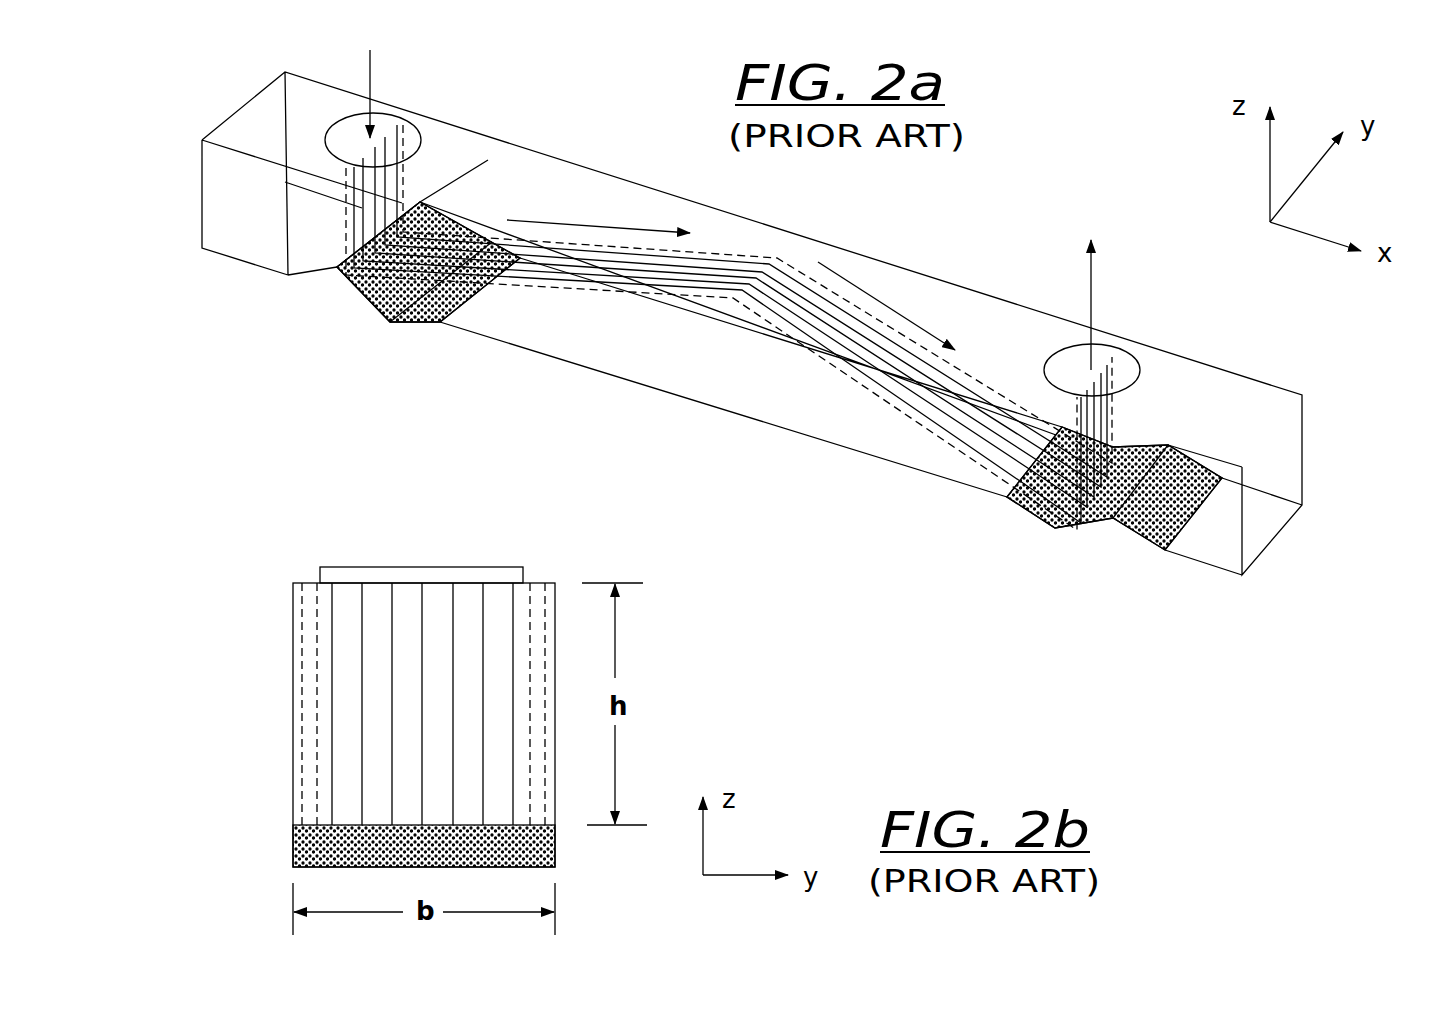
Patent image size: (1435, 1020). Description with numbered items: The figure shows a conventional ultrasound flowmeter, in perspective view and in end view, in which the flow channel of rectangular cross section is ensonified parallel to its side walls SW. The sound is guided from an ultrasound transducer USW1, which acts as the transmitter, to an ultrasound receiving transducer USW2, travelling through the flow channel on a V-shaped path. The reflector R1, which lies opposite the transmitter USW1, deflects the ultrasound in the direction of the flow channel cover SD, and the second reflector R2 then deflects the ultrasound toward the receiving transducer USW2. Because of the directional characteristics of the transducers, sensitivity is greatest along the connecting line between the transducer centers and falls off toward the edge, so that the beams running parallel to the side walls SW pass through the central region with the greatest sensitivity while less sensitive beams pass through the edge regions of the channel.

In FIG. 2A, the flow channel side walls SW is at (217, 185).
In FIG. 2B, the flow channel side walls SW is at (293, 693).
In FIG. 2A, the ultrasound transducer USW1 is at (407, 130).
In FIG. 2B, the ultrasound transducer USW1 is at (413, 566).
In FIG. 2A, the ultrasound receiving transducer USW2 is at (1132, 343).
In FIG. 2A, the reflector R1 is at (340, 295).
In FIG. 2B, the reflector R1 is at (317, 848).
In FIG. 2A, the second reflector R2 is at (1080, 542).
In FIG. 2A, the flow channel cover SD is at (857, 272).